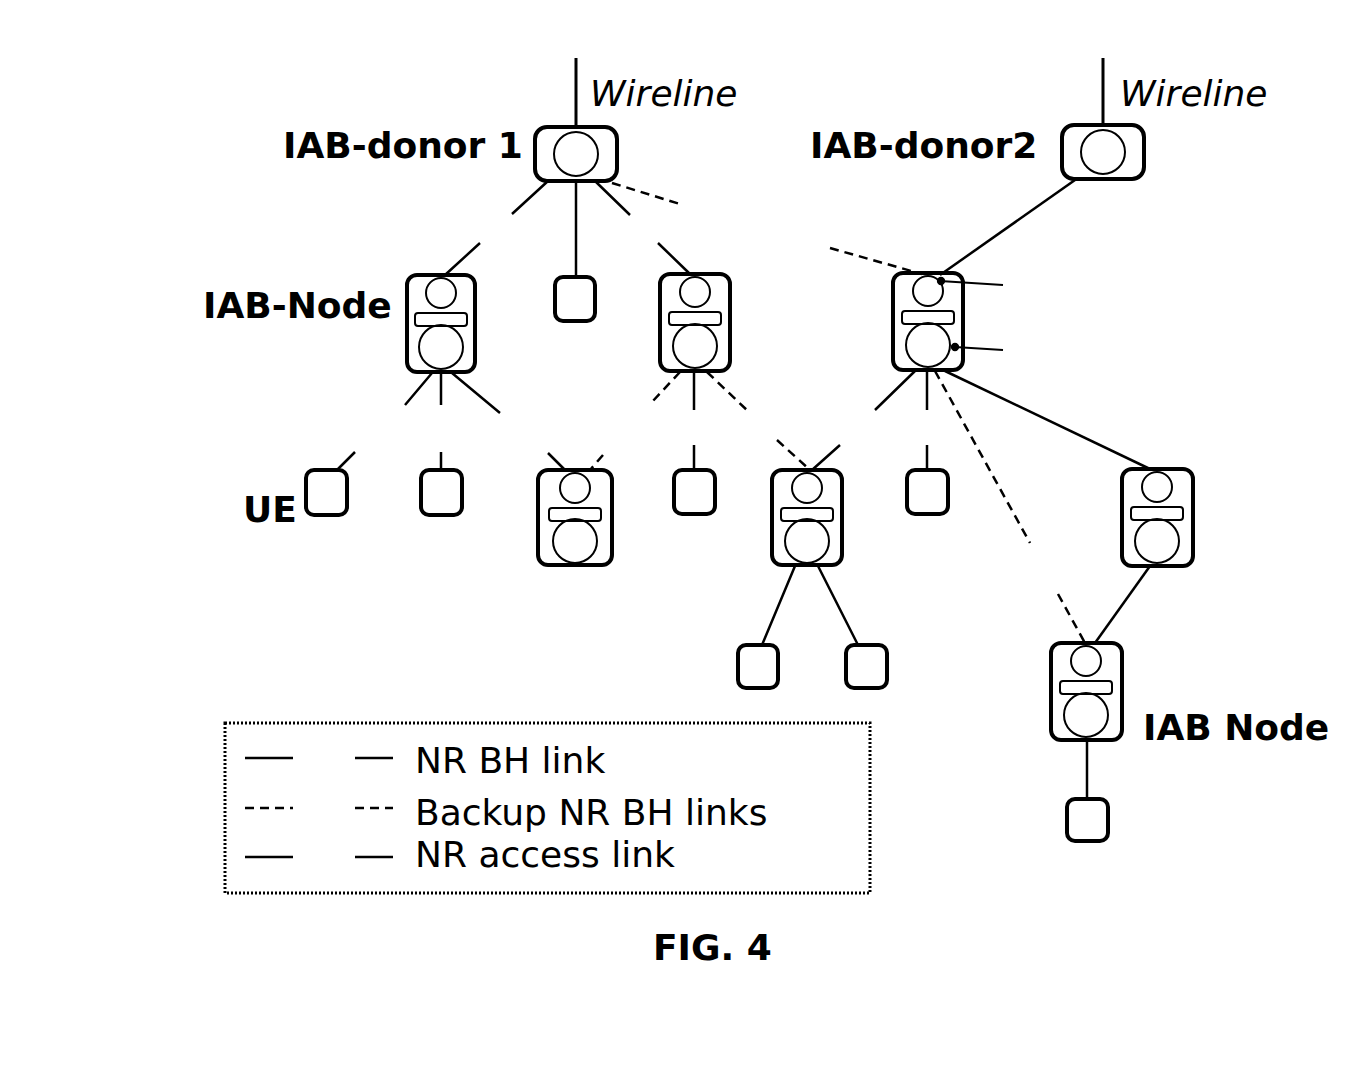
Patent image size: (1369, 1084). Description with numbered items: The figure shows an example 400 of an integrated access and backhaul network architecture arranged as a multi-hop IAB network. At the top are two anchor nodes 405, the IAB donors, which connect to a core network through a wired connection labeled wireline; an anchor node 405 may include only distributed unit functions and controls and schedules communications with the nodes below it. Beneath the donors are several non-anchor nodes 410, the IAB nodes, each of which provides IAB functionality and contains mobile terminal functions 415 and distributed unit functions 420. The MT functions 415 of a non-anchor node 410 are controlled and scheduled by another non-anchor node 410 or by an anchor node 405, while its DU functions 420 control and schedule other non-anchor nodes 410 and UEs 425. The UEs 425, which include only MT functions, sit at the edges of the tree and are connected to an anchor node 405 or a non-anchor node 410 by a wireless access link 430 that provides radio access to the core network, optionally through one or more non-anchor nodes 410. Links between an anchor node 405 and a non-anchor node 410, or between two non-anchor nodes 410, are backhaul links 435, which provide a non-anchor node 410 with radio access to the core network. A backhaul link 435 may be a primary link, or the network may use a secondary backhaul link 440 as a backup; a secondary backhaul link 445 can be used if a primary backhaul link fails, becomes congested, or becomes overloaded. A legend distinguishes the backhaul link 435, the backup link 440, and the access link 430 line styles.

The example of an integrated access and backhaul network architecture 400 is at (160, 102).
The anchor node 405 is at (538, 127).
The non-anchor node 410 is at (406, 342).
The mobile terminal functions 415 is at (1177, 304).
The distributed unit functions 420 is at (1177, 361).
The UE 425 is at (561, 321).
The access link 430 is at (349, 869).
The backhaul link 435 is at (349, 769).
The secondary backhaul link 440 is at (349, 819).
The secondary backhaul link 445 is at (1063, 584).